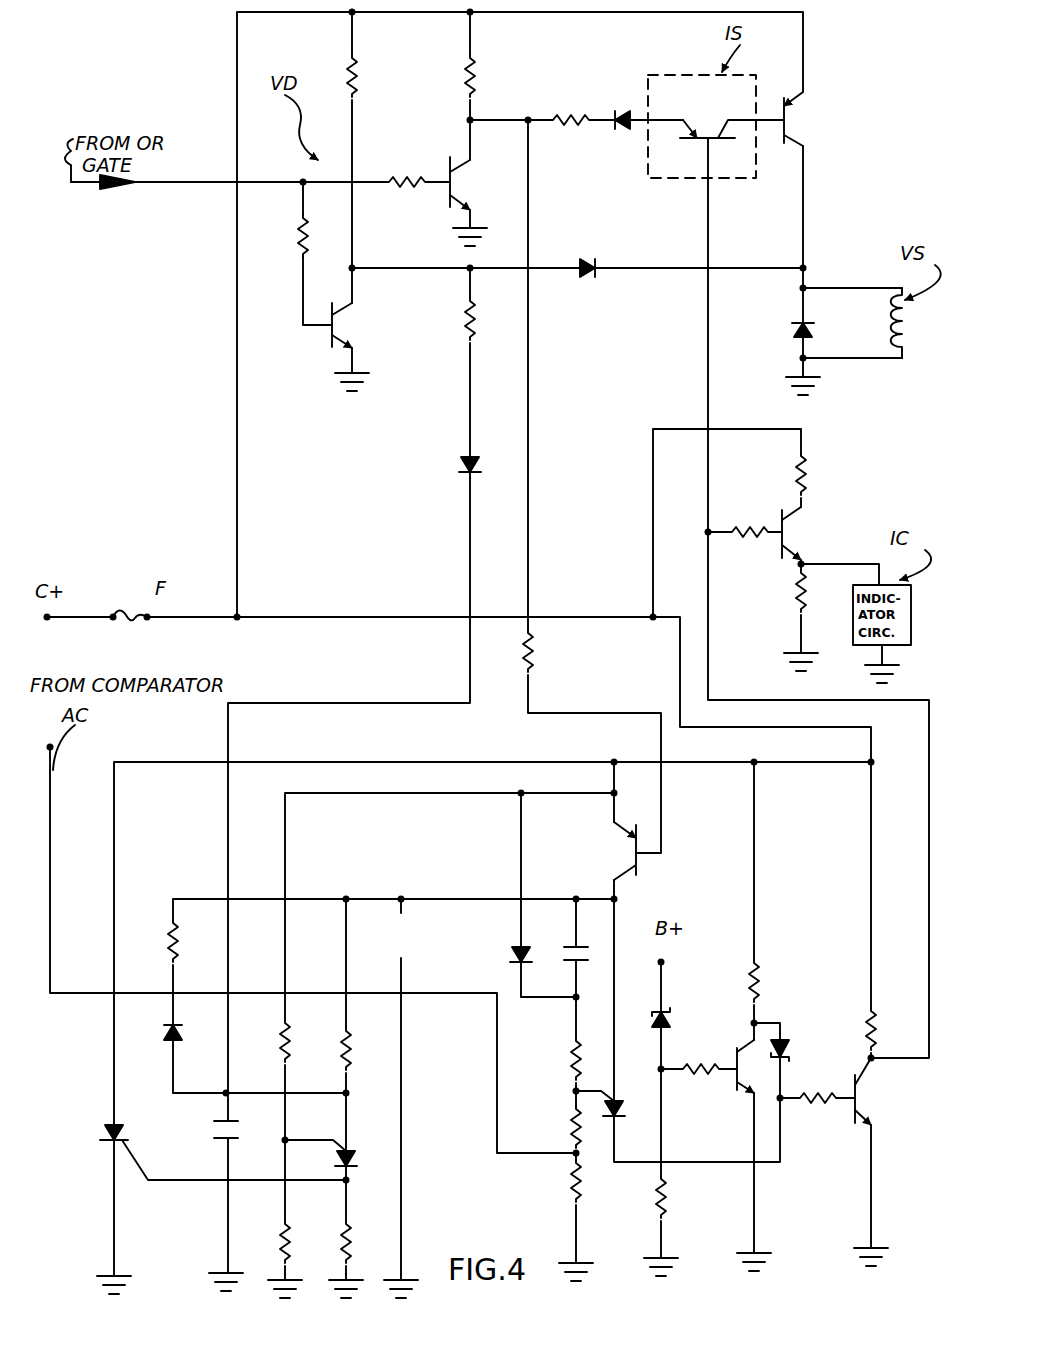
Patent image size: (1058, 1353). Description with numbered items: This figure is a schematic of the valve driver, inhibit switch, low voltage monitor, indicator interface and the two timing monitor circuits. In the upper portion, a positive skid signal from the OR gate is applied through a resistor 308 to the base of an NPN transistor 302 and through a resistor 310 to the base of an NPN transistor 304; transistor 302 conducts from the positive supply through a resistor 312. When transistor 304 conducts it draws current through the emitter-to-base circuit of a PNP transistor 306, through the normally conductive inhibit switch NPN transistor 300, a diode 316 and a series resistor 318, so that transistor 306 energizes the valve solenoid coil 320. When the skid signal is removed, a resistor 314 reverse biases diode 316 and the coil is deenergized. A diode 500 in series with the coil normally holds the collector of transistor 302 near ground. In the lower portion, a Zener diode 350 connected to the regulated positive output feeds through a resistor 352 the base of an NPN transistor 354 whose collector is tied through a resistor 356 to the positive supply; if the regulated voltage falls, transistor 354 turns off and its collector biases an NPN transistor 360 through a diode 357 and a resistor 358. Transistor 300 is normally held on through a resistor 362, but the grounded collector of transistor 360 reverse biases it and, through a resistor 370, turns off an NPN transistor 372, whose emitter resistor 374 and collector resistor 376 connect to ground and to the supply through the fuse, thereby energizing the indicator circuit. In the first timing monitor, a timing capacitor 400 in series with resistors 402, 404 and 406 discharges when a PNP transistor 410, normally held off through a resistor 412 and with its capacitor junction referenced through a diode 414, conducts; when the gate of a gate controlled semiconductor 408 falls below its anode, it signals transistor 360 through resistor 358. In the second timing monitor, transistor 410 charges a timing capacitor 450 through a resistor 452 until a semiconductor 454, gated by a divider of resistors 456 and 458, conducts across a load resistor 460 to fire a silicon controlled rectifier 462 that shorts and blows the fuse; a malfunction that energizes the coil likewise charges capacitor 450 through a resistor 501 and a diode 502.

The NPN transistor 300 is at (715, 105).
The NPN transistor 302 is at (340, 328).
The NPN transistor 304 is at (462, 180).
The PNP transistor 306 is at (790, 122).
The resistor 308 is at (297, 223).
The resistor 310 is at (405, 177).
The resistor 312 is at (359, 78).
The resistor 314 is at (477, 73).
The diode 316 is at (613, 128).
The resistor 318 is at (573, 116).
The valve solenoid coil 320 is at (885, 334).
The Zener diode 350 is at (670, 1022).
The resistor 352 is at (712, 1052).
The NPN transistor 354 is at (736, 1091).
The resistor 356 is at (758, 973).
The diode 357 is at (786, 1049).
The resistor 358 is at (832, 1082).
The NPN transistor 360 is at (872, 1105).
The resistor 362 is at (868, 1015).
The resistor 370 is at (746, 528).
The NPN transistor 372 is at (791, 533).
The resistor 374 is at (795, 590).
The resistor 376 is at (806, 478).
The timing capacitor 400 is at (571, 960).
The resistor 402 is at (571, 1057).
The resistor 404 is at (571, 1133).
The resistor 406 is at (572, 1182).
The gate controlled semiconductor 408 is at (614, 1118).
The PNP transistor 410 is at (630, 855).
The resistor 412 is at (532, 652).
The diode 414 is at (507, 958).
The timing capacitor 450 is at (212, 1138).
The resistor 452 is at (353, 1053).
The semiconductor 454 is at (353, 1156).
The resistor 456 is at (290, 1045).
The resistor 458 is at (290, 1247).
The load resistor 460 is at (380, 1245).
The silicon controlled rectifier 462 is at (100, 1140).
The diode 500 is at (588, 260).
The resistor 501 is at (473, 320).
The diode 502 is at (455, 469).